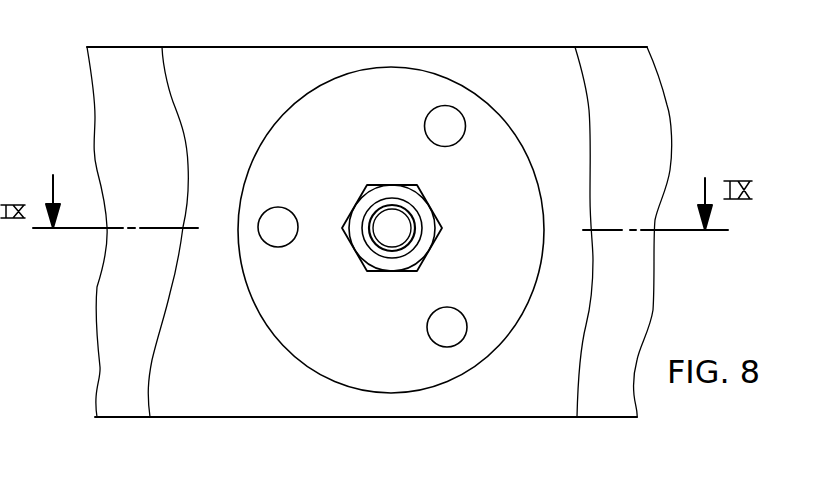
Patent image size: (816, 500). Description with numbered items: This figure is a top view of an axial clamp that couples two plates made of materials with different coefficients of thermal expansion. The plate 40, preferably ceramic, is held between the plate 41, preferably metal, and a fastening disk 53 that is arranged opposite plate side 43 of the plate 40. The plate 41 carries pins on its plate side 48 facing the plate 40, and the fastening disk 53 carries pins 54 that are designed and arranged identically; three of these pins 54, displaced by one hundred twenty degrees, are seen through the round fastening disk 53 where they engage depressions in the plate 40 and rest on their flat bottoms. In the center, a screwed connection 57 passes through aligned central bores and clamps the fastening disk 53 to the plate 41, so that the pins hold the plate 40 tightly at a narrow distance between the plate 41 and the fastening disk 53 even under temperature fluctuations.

The plate 40 is at (226, 417).
The plate 41 is at (602, 417).
The plate side 43 is at (280, 393).
The plate side 48 is at (640, 137).
The fastening disk 53 is at (326, 105).
The pins 54 is at (274, 240).
The screwed connection 57 is at (385, 238).